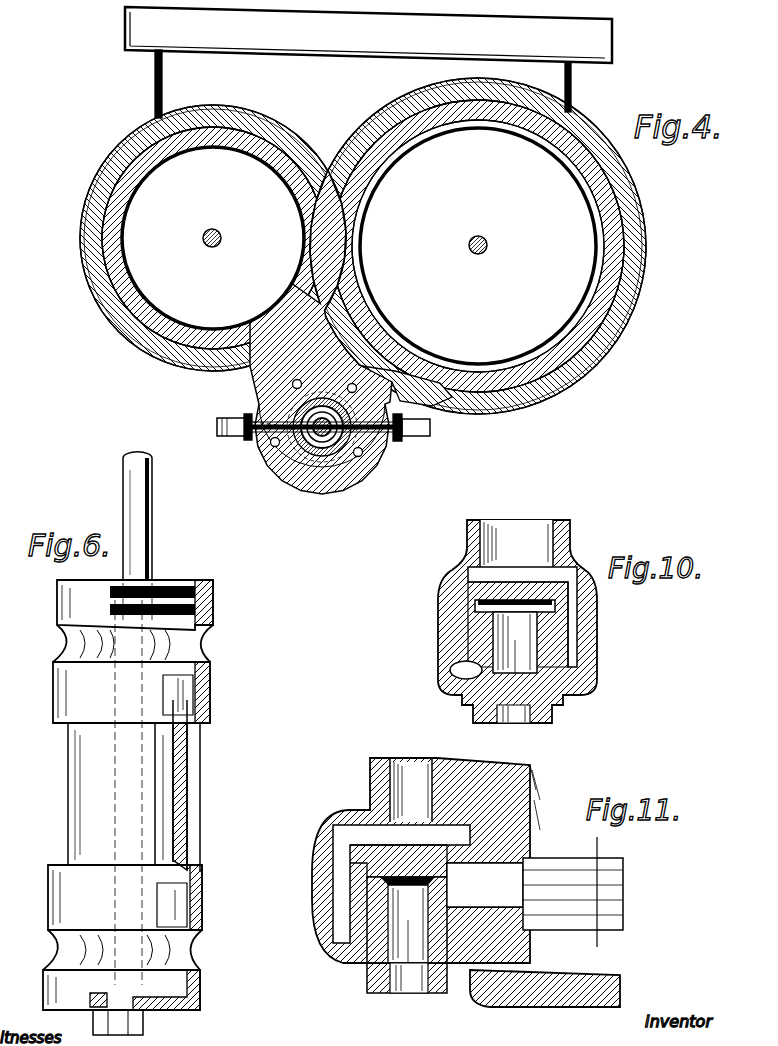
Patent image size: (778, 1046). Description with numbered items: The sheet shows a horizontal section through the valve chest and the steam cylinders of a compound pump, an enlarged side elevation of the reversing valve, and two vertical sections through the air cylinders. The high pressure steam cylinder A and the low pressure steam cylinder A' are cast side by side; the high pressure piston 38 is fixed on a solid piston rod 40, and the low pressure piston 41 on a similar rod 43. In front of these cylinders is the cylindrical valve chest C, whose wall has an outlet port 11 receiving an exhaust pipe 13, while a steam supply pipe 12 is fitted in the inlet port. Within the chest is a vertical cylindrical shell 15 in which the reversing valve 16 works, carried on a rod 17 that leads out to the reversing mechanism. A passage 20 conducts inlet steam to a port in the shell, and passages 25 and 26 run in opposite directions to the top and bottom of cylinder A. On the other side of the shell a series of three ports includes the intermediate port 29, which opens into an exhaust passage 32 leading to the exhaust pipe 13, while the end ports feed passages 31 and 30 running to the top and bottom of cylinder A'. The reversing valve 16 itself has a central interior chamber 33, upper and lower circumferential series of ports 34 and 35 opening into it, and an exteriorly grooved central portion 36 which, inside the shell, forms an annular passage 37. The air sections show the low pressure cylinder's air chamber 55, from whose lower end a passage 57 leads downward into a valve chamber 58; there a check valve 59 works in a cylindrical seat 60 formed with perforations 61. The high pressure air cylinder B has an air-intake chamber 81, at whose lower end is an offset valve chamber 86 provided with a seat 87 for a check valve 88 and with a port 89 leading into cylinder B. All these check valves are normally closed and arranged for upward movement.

In FIG. 4, the high pressure piston 38 is at (213, 238).
In FIG. 4, the piston rod 40 is at (210, 248).
In FIG. 4, the low pressure piston 41 is at (478, 246).
In FIG. 4, the piston rod 43 is at (476, 255).
In FIG. 4, the passage 31 is at (412, 357).
In FIG. 4, the passage 26 is at (256, 378).
In FIG. 4, the high pressure steam cylinder A is at (213, 248).
In FIG. 4, the low pressure steam cylinder A' is at (442, 401).
In FIG. 4, the reversing valve 16 is at (326, 462).
In FIG. 6, the reversing valve 16 is at (149, 692).
In FIG. 4, the valve rod 17 is at (311, 466).
In FIG. 4, the valve shell 15 is at (355, 457).
In FIG. 4, the annular passage 37 is at (300, 458).
In FIG. 6, the annular passage 37 is at (200, 815).
In FIG. 4, the intermediate port 29 is at (382, 424).
In FIG. 4, the passage 25 is at (272, 440).
In FIG. 4, the passage 30 is at (363, 453).
In FIG. 4, the valve chest C is at (372, 454).
In FIG. 4, the outlet port 11 is at (410, 436).
In FIG. 4, the exhaust pipe 13 is at (359, 439).
In FIG. 4, the steam supply pipe 12 is at (222, 431).
In FIG. 4, the exhaust passage 32 is at (432, 428).
In FIG. 4, the passage 20 is at (262, 436).
In FIG. 6, the upper series of ports 34 is at (192, 634).
In FIG. 6, the central interior chamber 33 is at (188, 772).
In FIG. 6, the grooved central portion 36 is at (196, 757).
In FIG. 6, the lower series of ports 35 is at (170, 943).
In FIG. 10, the air chamber 55 is at (560, 541).
In FIG. 10, the passage 57 is at (578, 614).
In FIG. 10, the valve chamber 58 is at (572, 632).
In FIG. 10, the check valve 59 is at (478, 610).
In FIG. 10, the cylindrical seat 60 is at (478, 640).
In FIG. 10, the perforations 61 is at (464, 680).
In FIG. 11, the air-intake chamber 81 is at (395, 764).
In FIG. 11, the offset valve chamber 86 is at (350, 856).
In FIG. 11, the valve seat 87 is at (375, 891).
In FIG. 11, the check valve 88 is at (370, 921).
In FIG. 11, the port 89 is at (485, 885).
In FIG. 11, the high pressure air cylinder B is at (573, 856).